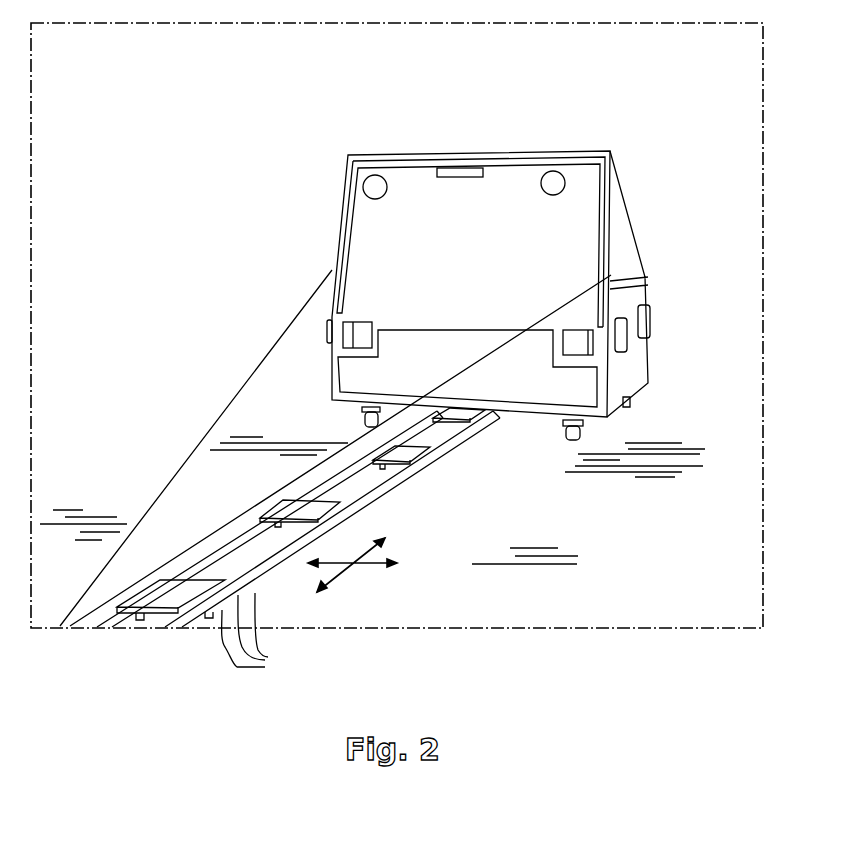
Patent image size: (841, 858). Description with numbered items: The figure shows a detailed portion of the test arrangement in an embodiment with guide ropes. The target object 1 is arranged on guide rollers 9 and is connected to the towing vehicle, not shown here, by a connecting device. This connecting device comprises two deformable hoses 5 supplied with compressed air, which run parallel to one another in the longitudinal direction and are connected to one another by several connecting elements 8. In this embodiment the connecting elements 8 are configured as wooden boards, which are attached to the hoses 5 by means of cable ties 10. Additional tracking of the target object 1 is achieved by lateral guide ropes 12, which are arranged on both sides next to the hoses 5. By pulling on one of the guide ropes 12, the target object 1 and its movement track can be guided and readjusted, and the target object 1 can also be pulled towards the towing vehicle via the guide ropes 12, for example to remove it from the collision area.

The target object 1 is at (517, 185).
The deformable hose 5 is at (315, 488).
The connecting element 8 is at (181, 570).
The guide rollers 9 is at (362, 423).
The cable ties 10 is at (262, 634).
The guide rope 12 is at (553, 313).